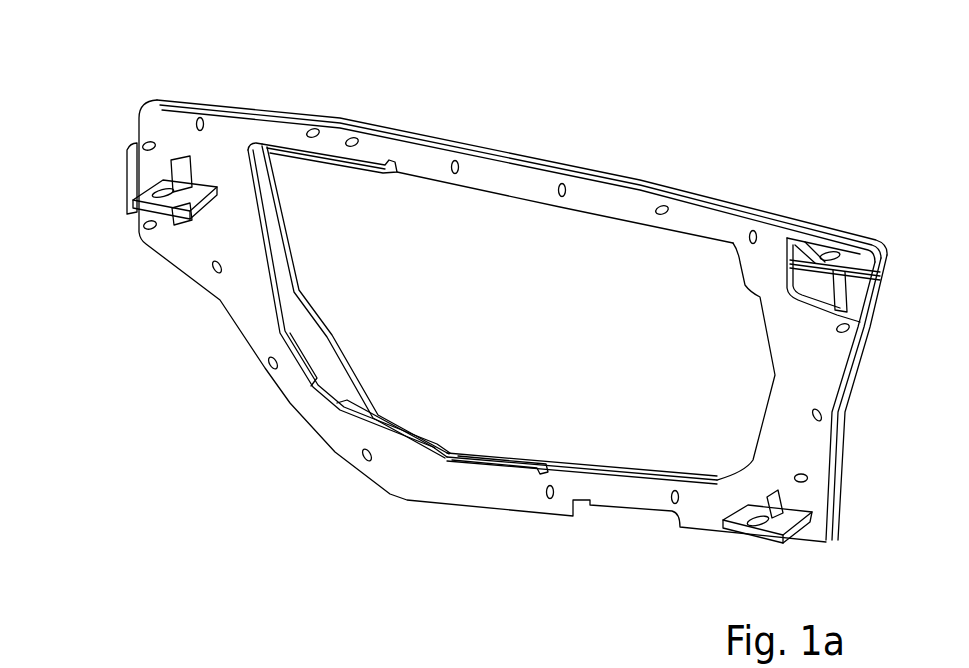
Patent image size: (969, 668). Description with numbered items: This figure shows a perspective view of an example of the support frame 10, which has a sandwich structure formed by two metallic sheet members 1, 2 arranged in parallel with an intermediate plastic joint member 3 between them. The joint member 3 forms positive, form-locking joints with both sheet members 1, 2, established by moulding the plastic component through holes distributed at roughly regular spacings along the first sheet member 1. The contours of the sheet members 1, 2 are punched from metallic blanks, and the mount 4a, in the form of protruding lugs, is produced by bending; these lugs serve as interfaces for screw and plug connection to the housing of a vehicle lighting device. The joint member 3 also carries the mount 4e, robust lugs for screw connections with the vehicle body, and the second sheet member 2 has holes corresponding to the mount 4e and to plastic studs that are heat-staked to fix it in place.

The first sheet member 1 is at (333, 330).
The second sheet member 2 is at (218, 301).
The joint member 3 is at (466, 144).
The mount 4a is at (300, 140).
The mount 4e is at (141, 186).
The support frame 10 is at (729, 114).